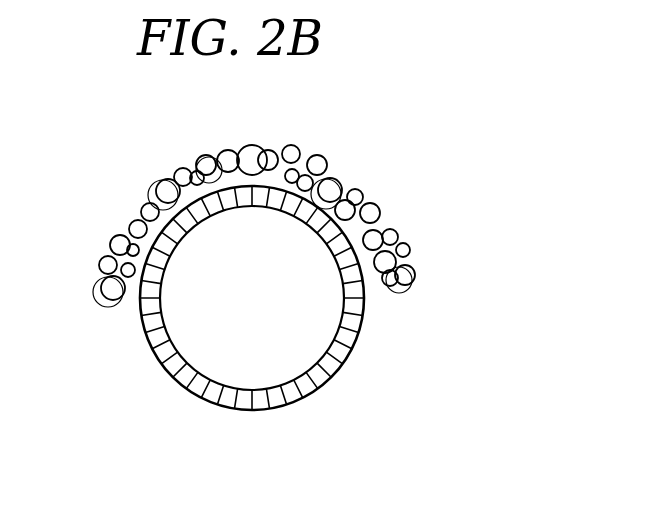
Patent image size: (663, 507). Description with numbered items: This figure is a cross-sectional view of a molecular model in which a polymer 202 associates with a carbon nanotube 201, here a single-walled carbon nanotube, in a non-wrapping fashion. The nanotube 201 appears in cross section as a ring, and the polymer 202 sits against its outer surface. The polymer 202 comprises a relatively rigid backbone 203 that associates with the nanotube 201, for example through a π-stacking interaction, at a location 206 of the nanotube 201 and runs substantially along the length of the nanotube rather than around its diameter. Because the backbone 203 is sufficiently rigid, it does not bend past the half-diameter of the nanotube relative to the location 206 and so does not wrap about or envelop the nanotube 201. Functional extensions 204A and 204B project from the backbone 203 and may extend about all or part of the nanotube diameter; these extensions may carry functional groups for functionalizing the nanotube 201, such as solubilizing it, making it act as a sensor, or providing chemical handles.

The carbon nanotube 201 is at (363, 332).
The polymer 202 is at (393, 105).
The backbone 203 is at (252, 146).
The functional extension 204A is at (103, 303).
The functional extension 204B is at (407, 250).
The location of nanotube 206 is at (243, 186).